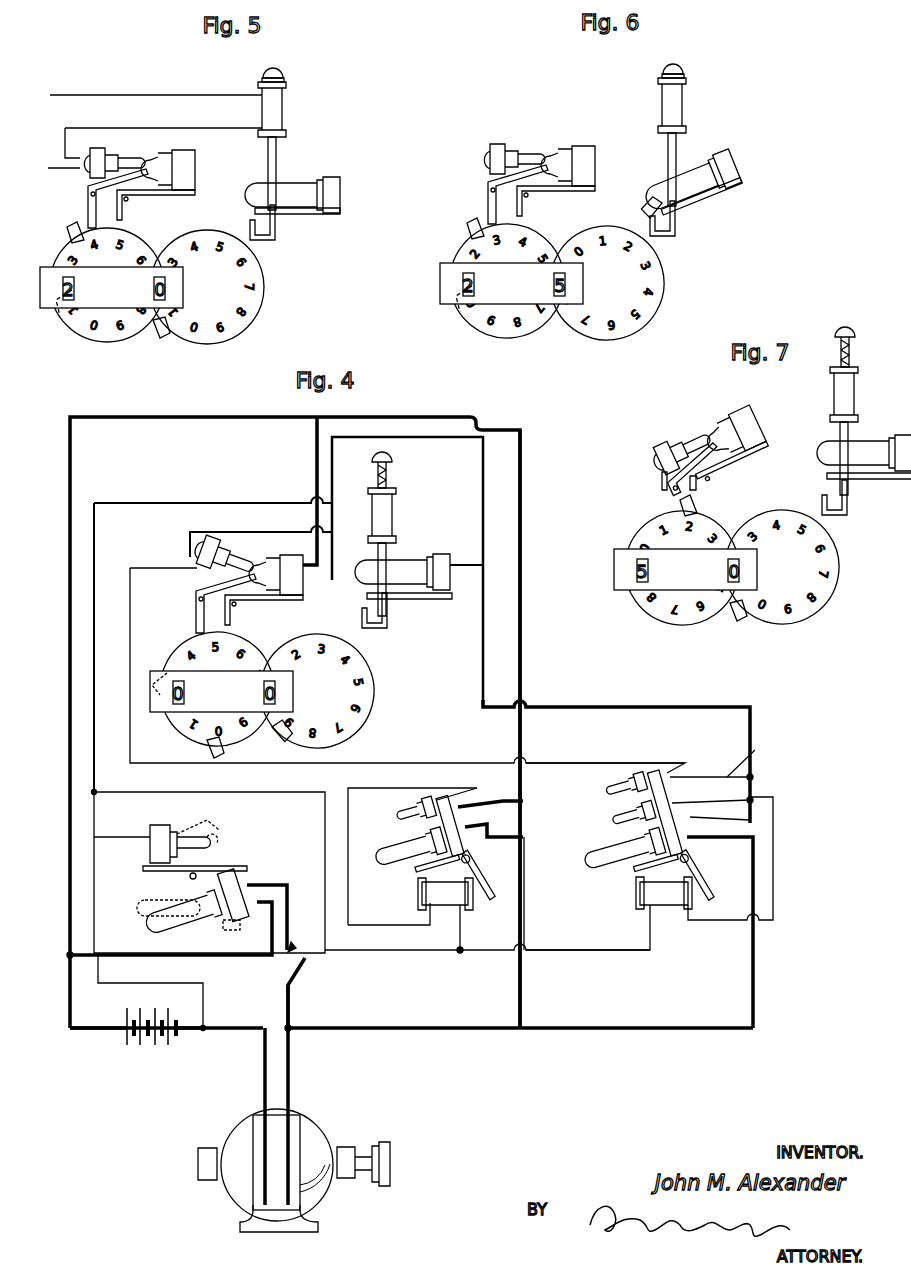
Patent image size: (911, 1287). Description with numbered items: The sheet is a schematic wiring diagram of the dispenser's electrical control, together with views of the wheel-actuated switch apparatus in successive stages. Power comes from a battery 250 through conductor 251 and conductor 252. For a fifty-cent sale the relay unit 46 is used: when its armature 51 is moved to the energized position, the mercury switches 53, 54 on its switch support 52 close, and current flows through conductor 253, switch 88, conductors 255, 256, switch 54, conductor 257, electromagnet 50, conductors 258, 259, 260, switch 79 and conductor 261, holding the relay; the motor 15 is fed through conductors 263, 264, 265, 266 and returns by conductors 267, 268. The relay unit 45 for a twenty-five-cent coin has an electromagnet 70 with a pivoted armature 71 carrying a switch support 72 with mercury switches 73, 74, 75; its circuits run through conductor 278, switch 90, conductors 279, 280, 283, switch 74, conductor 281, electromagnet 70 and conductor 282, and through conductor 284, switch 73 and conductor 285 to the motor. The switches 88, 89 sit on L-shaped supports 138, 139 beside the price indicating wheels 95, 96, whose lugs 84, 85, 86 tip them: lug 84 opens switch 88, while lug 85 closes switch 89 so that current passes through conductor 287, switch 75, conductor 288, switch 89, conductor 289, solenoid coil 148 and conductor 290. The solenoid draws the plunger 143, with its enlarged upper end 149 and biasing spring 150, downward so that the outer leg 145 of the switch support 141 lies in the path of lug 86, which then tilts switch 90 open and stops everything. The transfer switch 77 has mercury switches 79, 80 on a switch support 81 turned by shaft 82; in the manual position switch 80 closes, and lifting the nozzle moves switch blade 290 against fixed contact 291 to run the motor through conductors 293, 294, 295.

In FIG. 4, the pump motor 15 is at (318, 1140).
In FIG. 4, the relay unit 45 is at (646, 824).
In FIG. 4, the relay unit 46 is at (431, 820).
In FIG. 4, the electromagnet 50 is at (432, 898).
In FIG. 4, the armature 51 is at (454, 881).
In FIG. 4, the switch support 52 is at (450, 826).
In FIG. 4, the mercury switch 53 is at (410, 849).
In FIG. 4, the mercury switch 54 is at (415, 811).
In FIG. 4, the electromagnet 70 is at (650, 900).
In FIG. 4, the pivoted armature 71 is at (673, 882).
In FIG. 4, the switch support 72 is at (664, 813).
In FIG. 4, the mercury switch 73 is at (624, 850).
In FIG. 4, the mercury switch 74 is at (633, 814).
In FIG. 4, the mercury switch 75 is at (625, 786).
In FIG. 4, the switch 77 is at (190, 890).
In FIG. 4, the mercury switch 79 is at (190, 835).
In FIG. 4, the mercury switch 80 is at (160, 927).
In FIG. 4, the switch support 81 is at (148, 870).
In FIG. 4, the shaft 82 is at (190, 878).
In FIG. 5, the lug 84 is at (58, 316).
In FIG. 6, the lug 84 is at (454, 312).
In FIG. 7, the lug 84 is at (700, 511).
In FIG. 4, the lug 84 is at (220, 748).
In FIG. 5, the lug 85 is at (88, 229).
In FIG. 6, the lug 85 is at (468, 229).
In FIG. 4, the lug 85 is at (160, 673).
In FIG. 5, the lug 86 is at (170, 334).
In FIG. 6, the lug 86 is at (672, 239).
In FIG. 7, the lug 86 is at (742, 618).
In FIG. 4, the lug 86 is at (290, 737).
In FIG. 5, the switch 88 is at (160, 163).
In FIG. 6, the switch 88 is at (568, 147).
In FIG. 7, the switch 88 is at (726, 418).
In FIG. 4, the switch 88 is at (264, 566).
In FIG. 5, the switch 89 is at (128, 158).
In FIG. 6, the switch 89 is at (514, 141).
In FIG. 7, the switch 89 is at (683, 435).
In FIG. 4, the switch 89 is at (236, 565).
In FIG. 5, the switch 90 is at (300, 186).
In FIG. 6, the switch 90 is at (691, 174).
In FIG. 7, the switch 90 is at (862, 452).
In FIG. 4, the switch 90 is at (420, 568).
In FIG. 5, the indicating wheel 95 is at (111, 336).
In FIG. 6, the indicating wheel 95 is at (507, 283).
In FIG. 7, the indicating wheel 95 is at (658, 605).
In FIG. 4, the indicating wheel 95 is at (190, 725).
In FIG. 5, the indicating wheel 96 is at (228, 330).
In FIG. 6, the indicating wheel 96 is at (607, 285).
In FIG. 7, the indicating wheel 96 is at (820, 578).
In FIG. 4, the indicating wheel 96 is at (348, 676).
In FIG. 5, the L-shaped support 138 is at (120, 212).
In FIG. 6, the L-shaped support 138 is at (556, 203).
In FIG. 7, the L-shaped support 138 is at (700, 489).
In FIG. 4, the L-shaped support 138 is at (227, 609).
In FIG. 5, the L-shaped support 139 is at (88, 203).
In FIG. 6, the L-shaped support 139 is at (493, 194).
In FIG. 7, the L-shaped support 139 is at (662, 488).
In FIG. 4, the L-shaped support 139 is at (196, 609).
In FIG. 5, the switch support 141 is at (297, 211).
In FIG. 6, the switch support 141 is at (701, 199).
In FIG. 7, the switch support 141 is at (869, 476).
In FIG. 4, the switch support 141 is at (415, 600).
In FIG. 5, the plunger 143 is at (276, 165).
In FIG. 6, the plunger 143 is at (703, 154).
In FIG. 7, the plunger 143 is at (846, 440).
In FIG. 4, the plunger 143 is at (385, 555).
In FIG. 5, the outer leg 145 is at (262, 215).
In FIG. 6, the outer leg 145 is at (690, 225).
In FIG. 7, the outer leg 145 is at (822, 494).
In FIG. 4, the outer leg 145 is at (362, 610).
In FIG. 5, the solenoid coil 148 is at (283, 102).
In FIG. 6, the solenoid coil 148 is at (697, 103).
In FIG. 7, the solenoid coil 148 is at (846, 383).
In FIG. 4, the solenoid coil 148 is at (388, 508).
In FIG. 5, the enlarged upper end 149 is at (278, 70).
In FIG. 6, the enlarged upper end 149 is at (696, 48).
In FIG. 7, the enlarged upper end 149 is at (847, 330).
In FIG. 4, the enlarged upper end 149 is at (392, 455).
In FIG. 5, the spring 150 is at (285, 81).
In FIG. 6, the spring 150 is at (708, 56).
In FIG. 7, the spring 150 is at (850, 348).
In FIG. 4, the spring 150 is at (388, 474).
In FIG. 4, the battery 250 is at (148, 1045).
In FIG. 4, the conductor 251 is at (88, 1028).
In FIG. 4, the conductor 252 is at (186, 417).
In FIG. 4, the conductor 253 is at (316, 460).
In FIG. 4, the conductor 255 is at (332, 470).
In FIG. 4, the conductor 256 is at (502, 800).
In FIG. 4, the conductor 257 is at (376, 788).
In FIG. 4, the conductor 258 is at (462, 928).
In FIG. 4, the conductor 259 is at (325, 848).
In FIG. 4, the conductor 260 is at (94, 815).
In FIG. 4, the conductor 261 is at (98, 970).
In FIG. 4, the conductor 263 is at (523, 809).
In FIG. 4, the conductor 264 is at (524, 894).
In FIG. 4, the conductor 265 is at (438, 1028).
In FIG. 4, the conductor 266 is at (290, 1062).
In FIG. 4, the conductor 267 is at (263, 1088).
In FIG. 4, the conductor 268 is at (196, 1028).
In FIG. 4, the conductor 278 is at (412, 417).
In FIG. 4, the conductor 279 is at (483, 655).
In FIG. 4, the conductor 280 is at (752, 778).
In FIG. 4, the conductor 281 is at (775, 805).
In FIG. 4, the conductor 282 is at (612, 950).
In FIG. 4, the conductor 283 is at (720, 812).
In FIG. 4, the conductor 284 is at (755, 822).
In FIG. 4, the conductor 285 is at (774, 886).
In FIG. 4, the conductor 287 is at (755, 750).
In FIG. 4, the conductor 288 is at (560, 763).
In FIG. 4, the conductor 289 is at (190, 532).
In FIG. 4, the switch blade 290 is at (120, 503).
In FIG. 4, the fixed contact 291 is at (292, 950).
In FIG. 4, the conductor 293 is at (222, 955).
In FIG. 4, the conductor 294 is at (287, 890).
In FIG. 4, the conductor 295 is at (290, 1003).